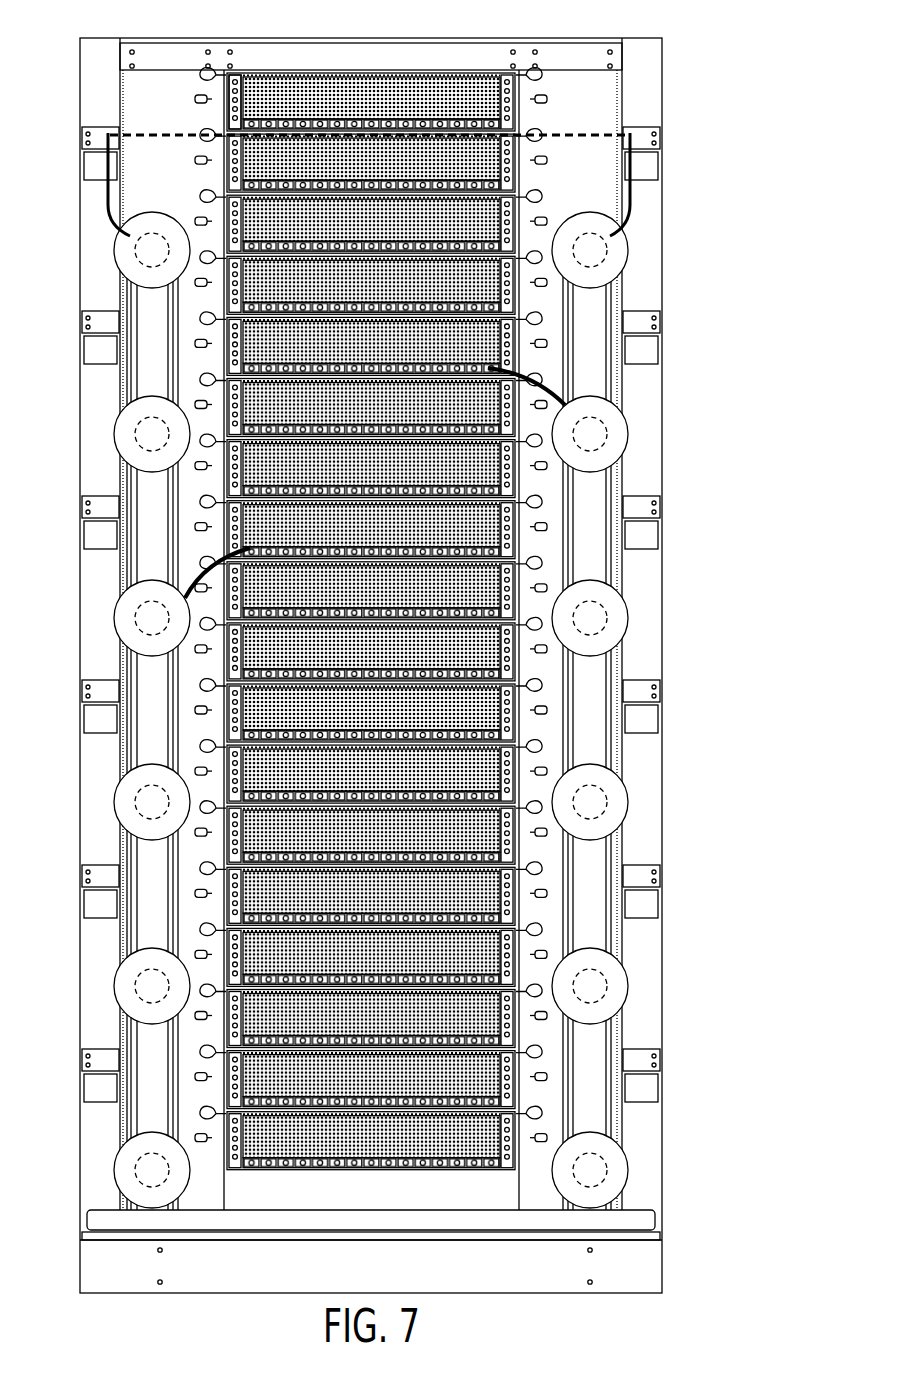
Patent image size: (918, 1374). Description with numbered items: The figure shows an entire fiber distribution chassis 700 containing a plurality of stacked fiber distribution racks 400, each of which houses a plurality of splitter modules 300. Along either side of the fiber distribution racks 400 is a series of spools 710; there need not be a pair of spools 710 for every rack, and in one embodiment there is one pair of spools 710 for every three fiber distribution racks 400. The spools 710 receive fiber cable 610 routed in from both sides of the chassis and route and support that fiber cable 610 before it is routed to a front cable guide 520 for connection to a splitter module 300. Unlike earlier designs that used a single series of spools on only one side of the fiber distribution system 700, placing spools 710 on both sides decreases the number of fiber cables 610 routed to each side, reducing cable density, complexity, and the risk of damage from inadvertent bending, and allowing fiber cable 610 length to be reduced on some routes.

The fiber distribution chassis 700 is at (411, 646).
The splitter module 300 is at (283, 75).
The fiber distribution rack 400 is at (240, 76).
The fiber cable 610 is at (636, 180).
The spool 710 is at (596, 615).
The front cable guide 520 is at (200, 702).